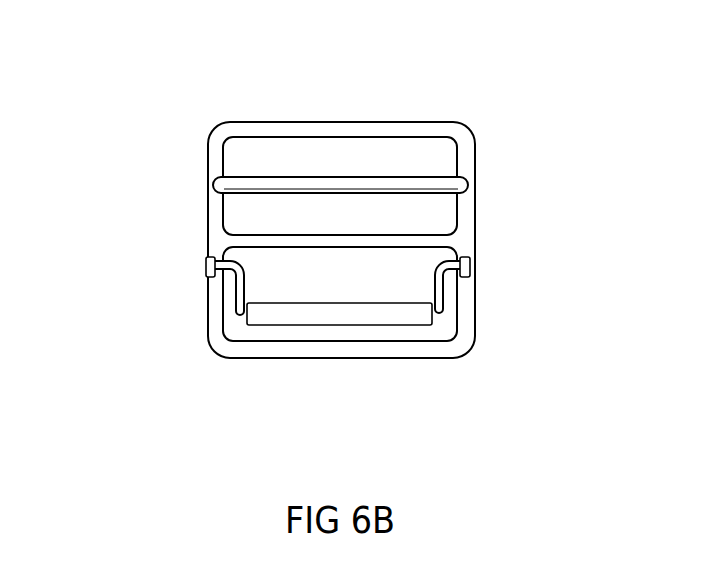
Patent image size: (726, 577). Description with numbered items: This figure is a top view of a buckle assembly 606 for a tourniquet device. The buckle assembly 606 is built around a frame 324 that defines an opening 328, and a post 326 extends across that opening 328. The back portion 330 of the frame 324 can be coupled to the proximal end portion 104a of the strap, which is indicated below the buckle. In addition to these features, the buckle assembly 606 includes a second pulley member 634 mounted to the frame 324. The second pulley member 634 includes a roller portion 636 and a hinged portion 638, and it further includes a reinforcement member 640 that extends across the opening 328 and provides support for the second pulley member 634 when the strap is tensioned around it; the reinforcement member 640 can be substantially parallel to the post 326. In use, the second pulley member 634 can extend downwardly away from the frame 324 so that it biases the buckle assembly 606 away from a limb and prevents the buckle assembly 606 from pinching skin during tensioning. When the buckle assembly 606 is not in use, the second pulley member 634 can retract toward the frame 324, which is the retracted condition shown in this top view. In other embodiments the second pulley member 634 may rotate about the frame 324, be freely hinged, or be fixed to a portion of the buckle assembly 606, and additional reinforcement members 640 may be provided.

The proximal end portion 104a is at (321, 246).
The buckle assembly 606 is at (321, 223).
The frame 324 is at (408, 163).
The post 326 is at (271, 138).
The opening 328 is at (322, 139).
The back portion 330 is at (407, 340).
The second pulley member 634 is at (248, 236).
The roller portion 636 is at (253, 337).
The hinged portion 638 is at (406, 286).
The reinforcement member 640 is at (415, 257).